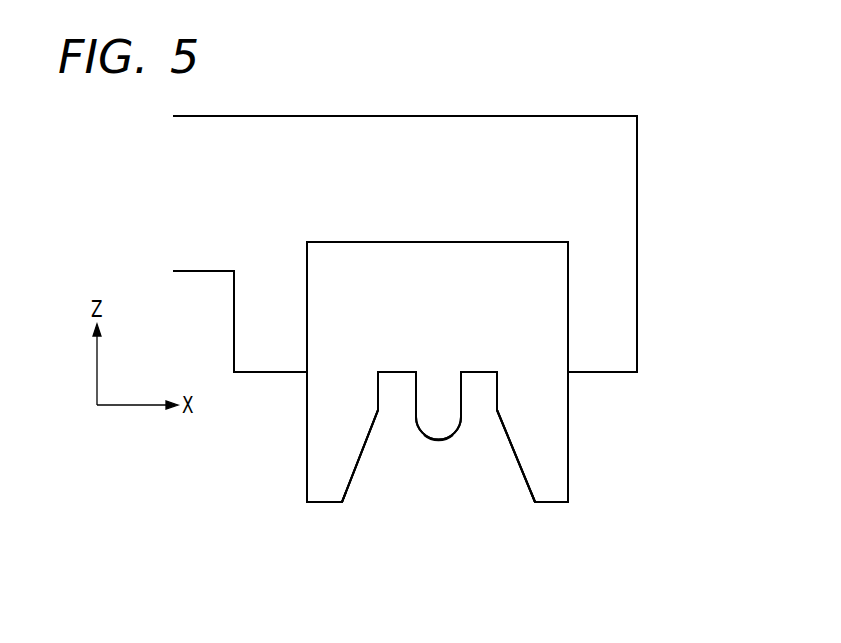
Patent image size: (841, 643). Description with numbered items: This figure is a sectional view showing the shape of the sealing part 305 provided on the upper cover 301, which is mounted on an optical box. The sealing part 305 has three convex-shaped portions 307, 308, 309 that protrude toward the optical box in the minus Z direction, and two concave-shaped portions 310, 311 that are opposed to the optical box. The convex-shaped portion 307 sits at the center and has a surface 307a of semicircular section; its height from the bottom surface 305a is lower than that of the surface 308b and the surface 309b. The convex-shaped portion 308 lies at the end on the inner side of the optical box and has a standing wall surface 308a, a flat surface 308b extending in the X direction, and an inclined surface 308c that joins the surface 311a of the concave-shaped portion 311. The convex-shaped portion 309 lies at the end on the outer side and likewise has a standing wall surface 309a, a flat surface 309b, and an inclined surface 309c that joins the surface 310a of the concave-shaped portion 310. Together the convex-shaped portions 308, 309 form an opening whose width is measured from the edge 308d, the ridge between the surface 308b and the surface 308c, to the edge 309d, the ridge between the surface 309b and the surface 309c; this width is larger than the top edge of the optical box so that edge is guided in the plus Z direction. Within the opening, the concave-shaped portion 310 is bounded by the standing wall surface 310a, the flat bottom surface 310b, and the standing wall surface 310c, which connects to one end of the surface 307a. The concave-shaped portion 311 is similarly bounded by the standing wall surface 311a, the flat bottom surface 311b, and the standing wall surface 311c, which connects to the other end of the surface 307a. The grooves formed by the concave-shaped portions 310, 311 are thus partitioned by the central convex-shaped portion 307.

The upper cover 301 is at (313, 136).
The sealing part 305 is at (432, 257).
The bottom surface 305a is at (487, 243).
The convex-shaped portion 307 is at (430, 418).
The surface 307a is at (440, 443).
The convex-shaped portion 308 is at (320, 456).
The surface 308a is at (307, 432).
The surface 308b is at (320, 504).
The surface 308c is at (361, 455).
The edge 308d is at (342, 504).
The convex-shaped portion 309 is at (560, 467).
The surface 309a is at (568, 423).
The surface 309b is at (555, 504).
The surface 309c is at (518, 468).
The edge 309d is at (535, 504).
The concave-shaped portion 310 is at (475, 382).
The surface 310a is at (497, 388).
The surface 310b is at (497, 371).
The surface 310c is at (463, 393).
The concave-shaped portion 311 is at (390, 382).
The surface 311a is at (378, 396).
The surface 311b is at (414, 370).
The surface 311c is at (414, 390).